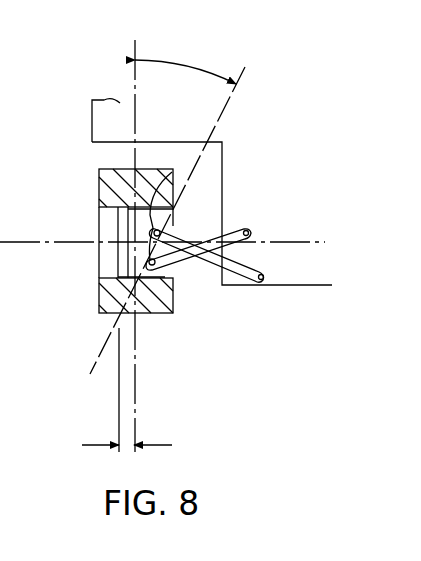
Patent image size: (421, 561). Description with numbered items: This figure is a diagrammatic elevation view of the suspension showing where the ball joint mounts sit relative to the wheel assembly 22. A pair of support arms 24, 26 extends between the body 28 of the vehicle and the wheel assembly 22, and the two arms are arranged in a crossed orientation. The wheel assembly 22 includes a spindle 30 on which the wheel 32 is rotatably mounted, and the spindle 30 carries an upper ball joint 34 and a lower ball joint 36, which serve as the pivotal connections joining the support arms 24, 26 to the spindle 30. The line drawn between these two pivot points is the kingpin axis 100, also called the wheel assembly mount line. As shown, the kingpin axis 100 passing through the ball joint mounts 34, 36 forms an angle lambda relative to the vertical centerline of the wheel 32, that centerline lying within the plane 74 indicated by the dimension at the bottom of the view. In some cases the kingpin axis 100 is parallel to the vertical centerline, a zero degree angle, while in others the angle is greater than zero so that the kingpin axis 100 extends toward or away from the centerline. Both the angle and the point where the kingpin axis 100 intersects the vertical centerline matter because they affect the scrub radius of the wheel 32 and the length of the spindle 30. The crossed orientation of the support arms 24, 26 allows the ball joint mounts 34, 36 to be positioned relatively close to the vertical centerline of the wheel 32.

The wheel assembly 22 is at (128, 250).
The support arm 24 is at (230, 228).
The support arm 26 is at (245, 266).
The body of the vehicle 28 is at (92, 124).
The spindle 30 is at (144, 175).
The wheel 32 is at (158, 313).
The upper ball joint 34 is at (162, 222).
The lower ball joint 36 is at (164, 268).
The plane 74 is at (136, 410).
The kingpin axis 100 is at (236, 98).
The angle lambda is at (188, 64).